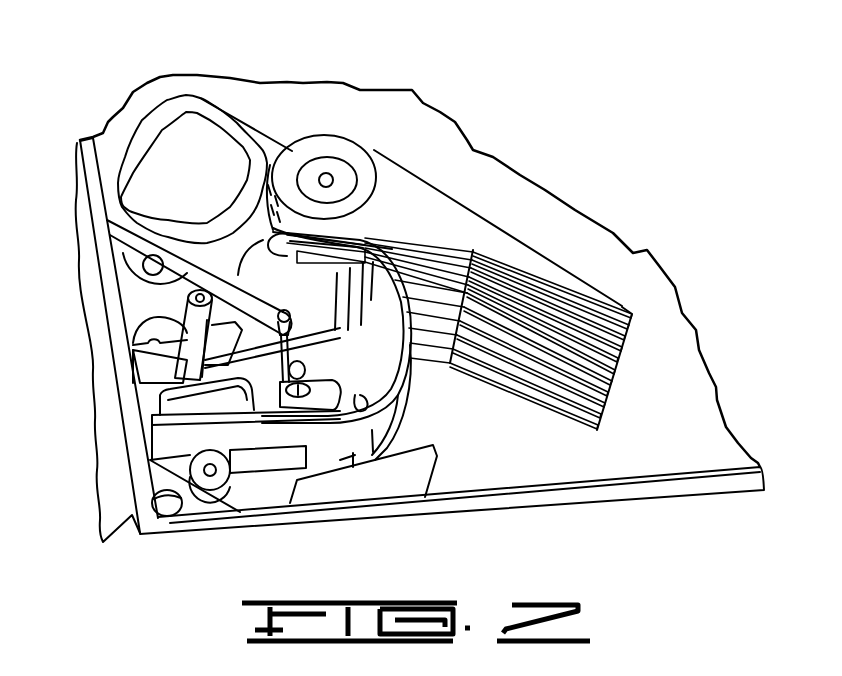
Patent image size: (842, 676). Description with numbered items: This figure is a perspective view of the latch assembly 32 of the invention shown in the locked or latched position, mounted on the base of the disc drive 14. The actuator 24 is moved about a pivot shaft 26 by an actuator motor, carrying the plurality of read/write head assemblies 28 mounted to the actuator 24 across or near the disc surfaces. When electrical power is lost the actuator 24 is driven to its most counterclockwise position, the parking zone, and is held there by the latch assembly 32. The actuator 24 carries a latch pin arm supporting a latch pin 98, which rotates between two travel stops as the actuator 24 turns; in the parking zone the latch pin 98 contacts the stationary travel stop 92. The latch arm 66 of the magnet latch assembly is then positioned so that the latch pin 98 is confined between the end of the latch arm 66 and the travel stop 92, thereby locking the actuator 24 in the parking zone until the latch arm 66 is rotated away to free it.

The base plate 14 is at (108, 421).
The actuator 24 is at (423, 200).
The pivot shaft 26 is at (327, 172).
The read/write head assemblies 28 is at (625, 306).
The latch assembly 32 is at (147, 367).
The latch arm 66 is at (270, 305).
The latch pin 98 is at (292, 349).
The travel stop 92 is at (318, 363).